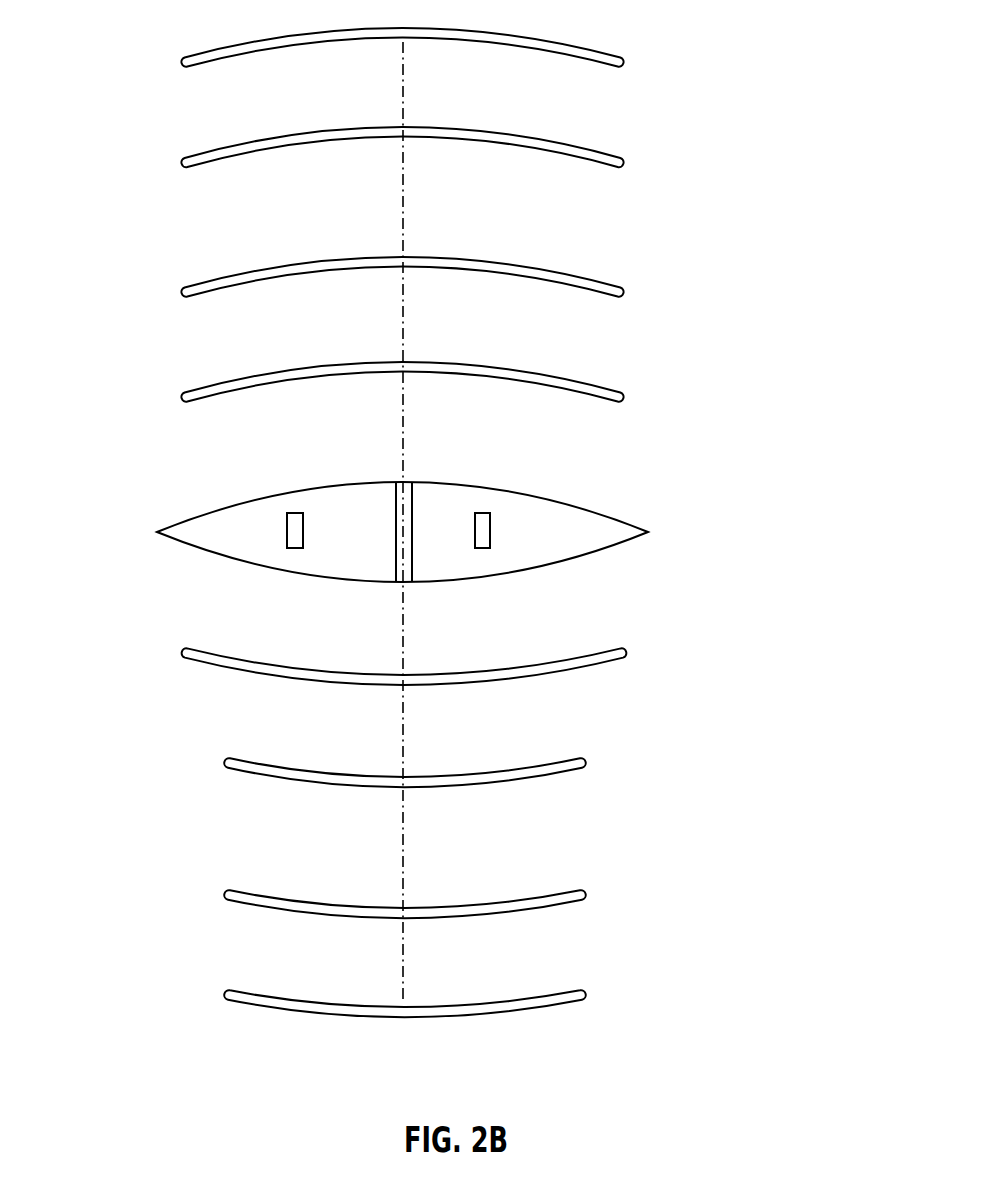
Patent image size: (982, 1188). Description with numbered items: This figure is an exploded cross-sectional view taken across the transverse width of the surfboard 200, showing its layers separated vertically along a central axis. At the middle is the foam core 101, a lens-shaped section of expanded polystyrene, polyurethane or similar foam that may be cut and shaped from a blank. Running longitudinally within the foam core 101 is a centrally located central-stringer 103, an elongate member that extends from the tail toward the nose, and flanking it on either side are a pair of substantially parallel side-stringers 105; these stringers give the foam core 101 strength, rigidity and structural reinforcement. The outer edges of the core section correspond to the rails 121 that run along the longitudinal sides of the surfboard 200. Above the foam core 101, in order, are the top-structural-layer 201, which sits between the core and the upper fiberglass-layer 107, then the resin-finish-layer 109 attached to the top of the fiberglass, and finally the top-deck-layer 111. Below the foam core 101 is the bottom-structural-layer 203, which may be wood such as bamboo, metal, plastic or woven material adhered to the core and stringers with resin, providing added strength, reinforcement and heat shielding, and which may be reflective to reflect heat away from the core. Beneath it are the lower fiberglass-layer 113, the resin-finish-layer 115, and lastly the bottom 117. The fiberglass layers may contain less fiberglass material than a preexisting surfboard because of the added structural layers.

The surfboard 200 is at (130, 78).
The top-deck-layer 111 is at (589, 47).
The resin-finish-layer 109 is at (589, 147).
The fiberglass-layer 107 is at (589, 277).
The top-structural-layer 201 is at (581, 382).
The foam core 101 is at (369, 548).
The central-stringer 103 is at (402, 586).
The side-stringers 105 is at (295, 513).
The rails 121 is at (128, 524).
The bottom-structural-layer 203 is at (545, 676).
The fiberglass-layer 113 is at (533, 782).
The resin-finish-layer 115 is at (540, 908).
The bottom 117 is at (543, 1008).